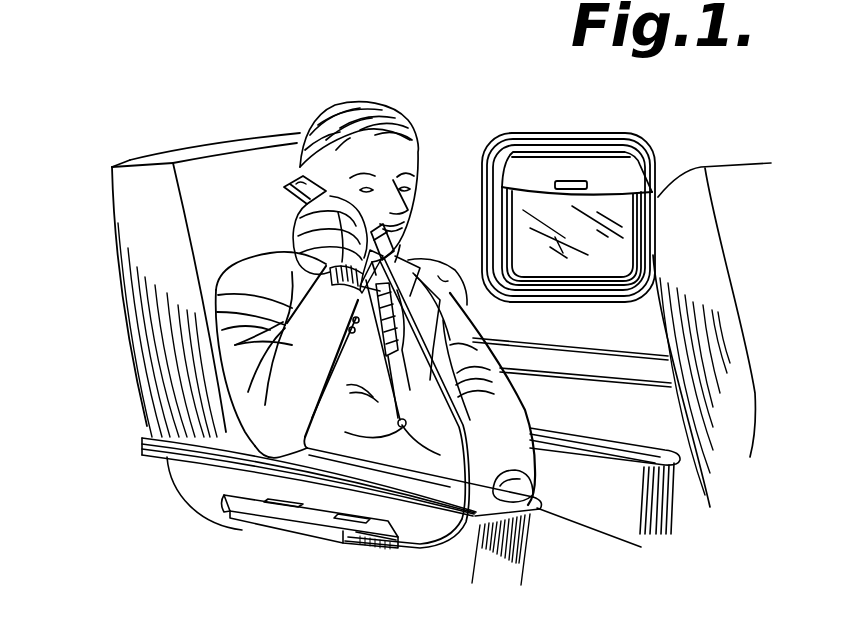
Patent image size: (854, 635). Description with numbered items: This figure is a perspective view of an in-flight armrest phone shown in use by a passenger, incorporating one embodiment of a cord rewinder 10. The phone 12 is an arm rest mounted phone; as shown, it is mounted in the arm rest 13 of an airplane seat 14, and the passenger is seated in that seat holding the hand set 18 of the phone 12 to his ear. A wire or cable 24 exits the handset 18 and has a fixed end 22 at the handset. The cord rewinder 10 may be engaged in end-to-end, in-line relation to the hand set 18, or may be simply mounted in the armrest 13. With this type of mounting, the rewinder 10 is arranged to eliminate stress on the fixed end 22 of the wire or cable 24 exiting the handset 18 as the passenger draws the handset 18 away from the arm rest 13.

The cord rewinder 10 is at (300, 527).
The arm rest mounted phone 12 is at (262, 188).
The arm rest 13 is at (537, 504).
The airplane seat 14 is at (126, 132).
The hand set 18 is at (303, 177).
The fixed end 22 is at (443, 278).
The wire or cable 24 is at (421, 549).